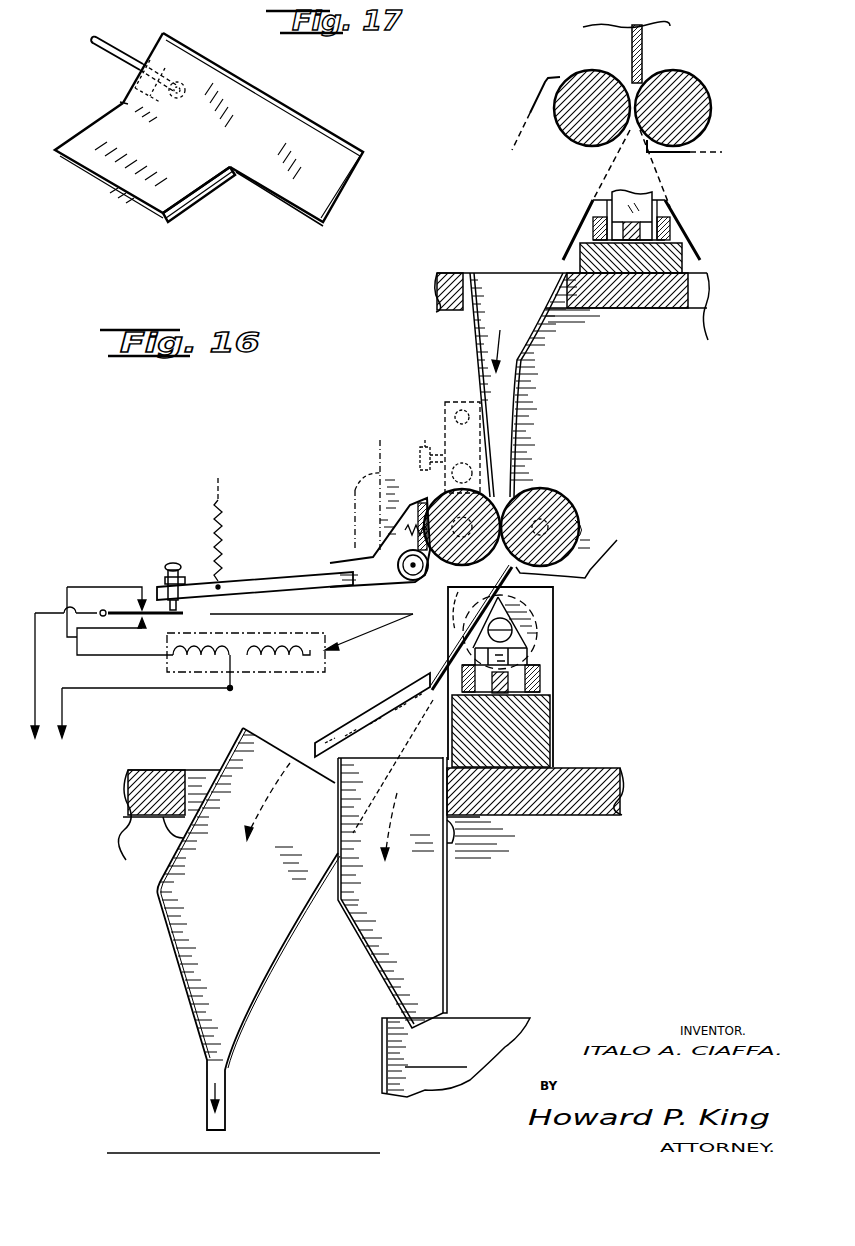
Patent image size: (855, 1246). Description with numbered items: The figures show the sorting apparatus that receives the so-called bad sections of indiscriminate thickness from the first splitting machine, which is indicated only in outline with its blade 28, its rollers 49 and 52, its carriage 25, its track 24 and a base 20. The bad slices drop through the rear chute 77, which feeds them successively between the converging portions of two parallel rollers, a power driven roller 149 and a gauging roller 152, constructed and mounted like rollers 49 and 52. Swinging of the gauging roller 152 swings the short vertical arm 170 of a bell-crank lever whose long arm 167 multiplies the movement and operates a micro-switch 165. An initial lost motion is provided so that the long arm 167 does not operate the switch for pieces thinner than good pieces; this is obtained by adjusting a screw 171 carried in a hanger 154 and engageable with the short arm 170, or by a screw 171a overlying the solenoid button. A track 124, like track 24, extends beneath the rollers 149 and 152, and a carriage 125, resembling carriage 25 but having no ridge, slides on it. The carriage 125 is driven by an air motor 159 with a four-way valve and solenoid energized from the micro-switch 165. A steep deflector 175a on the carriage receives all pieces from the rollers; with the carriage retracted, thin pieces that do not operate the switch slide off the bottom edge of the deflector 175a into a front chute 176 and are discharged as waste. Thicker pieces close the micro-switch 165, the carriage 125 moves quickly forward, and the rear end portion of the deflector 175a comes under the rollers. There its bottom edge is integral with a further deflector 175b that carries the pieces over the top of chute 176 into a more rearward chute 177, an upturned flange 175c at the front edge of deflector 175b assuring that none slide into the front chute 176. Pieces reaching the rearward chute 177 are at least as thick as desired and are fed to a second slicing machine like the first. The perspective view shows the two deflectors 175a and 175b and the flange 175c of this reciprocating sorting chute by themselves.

In FIG. 16, the blade 28 is at (643, 45).
In FIG. 16, the roller 49 is at (712, 108).
In FIG. 16, the roller 52 is at (566, 136).
In FIG. 16, the carriage 25 is at (652, 190).
In FIG. 16, the track 24 is at (676, 268).
In FIG. 16, the base plate 20 is at (670, 310).
In FIG. 16, the rear chute 77 is at (514, 403).
In FIG. 16, the hanger 154 is at (443, 420).
In FIG. 16, the short vertical arm 170 is at (420, 440).
In FIG. 16, the screw 171 is at (430, 463).
In FIG. 16, the gauging roller 152 is at (490, 497).
In FIG. 16, the power driven roller 149 is at (571, 510).
In FIG. 16, the screw 171a is at (177, 562).
In FIG. 16, the micro-switch 165 is at (117, 610).
In FIG. 16, the long arm 167 is at (290, 577).
In FIG. 16, the air motor 159 is at (543, 628).
In FIG. 16, the carriage 125 is at (530, 655).
In FIG. 16, the track 124 is at (537, 727).
In FIG. 17, the deflector 175a is at (278, 117).
In FIG. 16, the deflector 175a is at (468, 630).
In FIG. 17, the further deflector 175b is at (112, 173).
In FIG. 16, the further deflector 175b is at (327, 763).
In FIG. 17, the upturned flange 175c is at (203, 193).
In FIG. 16, the upturned flange 175c is at (340, 730).
In FIG. 16, the chute 176 is at (447, 922).
In FIG. 16, the rearward chute 177 is at (182, 968).